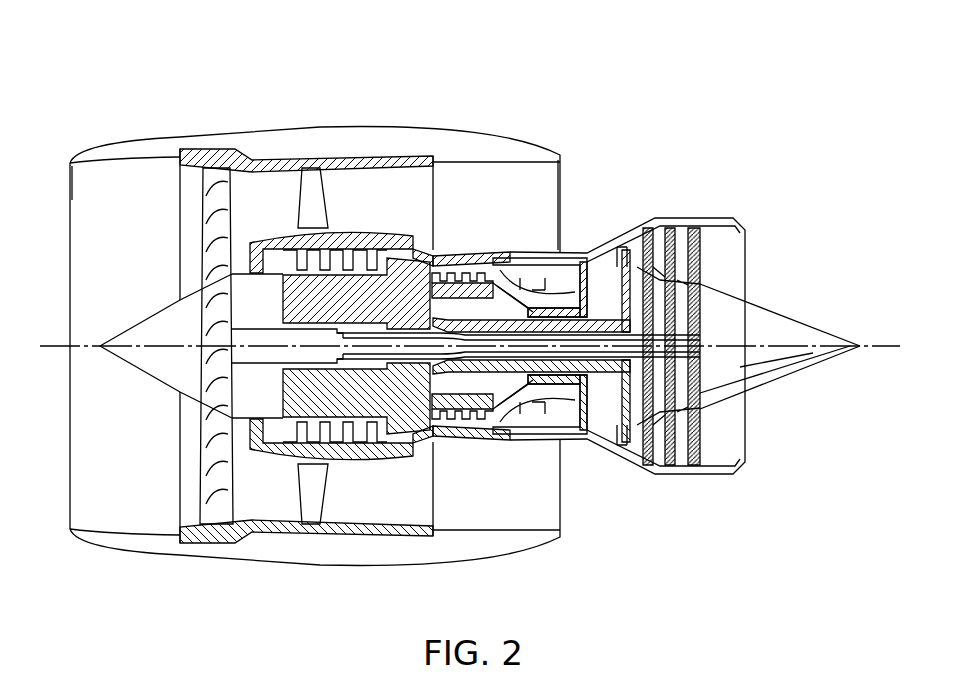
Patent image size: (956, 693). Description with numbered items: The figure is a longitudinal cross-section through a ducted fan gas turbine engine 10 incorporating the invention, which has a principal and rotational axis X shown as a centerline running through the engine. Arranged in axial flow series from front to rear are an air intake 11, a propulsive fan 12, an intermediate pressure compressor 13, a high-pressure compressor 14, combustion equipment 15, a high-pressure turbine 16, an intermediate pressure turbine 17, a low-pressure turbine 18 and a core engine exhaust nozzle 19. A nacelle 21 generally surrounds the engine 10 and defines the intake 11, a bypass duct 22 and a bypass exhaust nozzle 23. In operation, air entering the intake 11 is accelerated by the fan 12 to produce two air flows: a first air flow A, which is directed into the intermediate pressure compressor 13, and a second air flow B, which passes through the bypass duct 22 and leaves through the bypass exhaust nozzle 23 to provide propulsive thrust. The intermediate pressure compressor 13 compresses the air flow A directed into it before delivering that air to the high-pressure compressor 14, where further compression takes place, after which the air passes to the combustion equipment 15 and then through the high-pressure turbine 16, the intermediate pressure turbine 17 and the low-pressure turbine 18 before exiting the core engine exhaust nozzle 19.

The ducted fan gas turbine engine 10 is at (148, 105).
The air intake 11 is at (125, 160).
The propulsive fan 12 is at (198, 473).
The intermediate pressure compressor 13 is at (350, 460).
The high-pressure compressor 14 is at (456, 274).
The combustion equipment 15 is at (503, 430).
The high-pressure turbine 16 is at (577, 438).
The intermediate pressure turbine 17 is at (613, 247).
The low-pressure turbine 18 is at (640, 463).
The core engine exhaust nozzle 19 is at (738, 230).
The nacelle 21 is at (318, 126).
The bypass duct 22 is at (531, 204).
The bypass exhaust nozzle 23 is at (560, 156).
The first air flow A is at (263, 257).
The second air flow B is at (273, 200).
The principal and rotational axis X is at (471, 347).